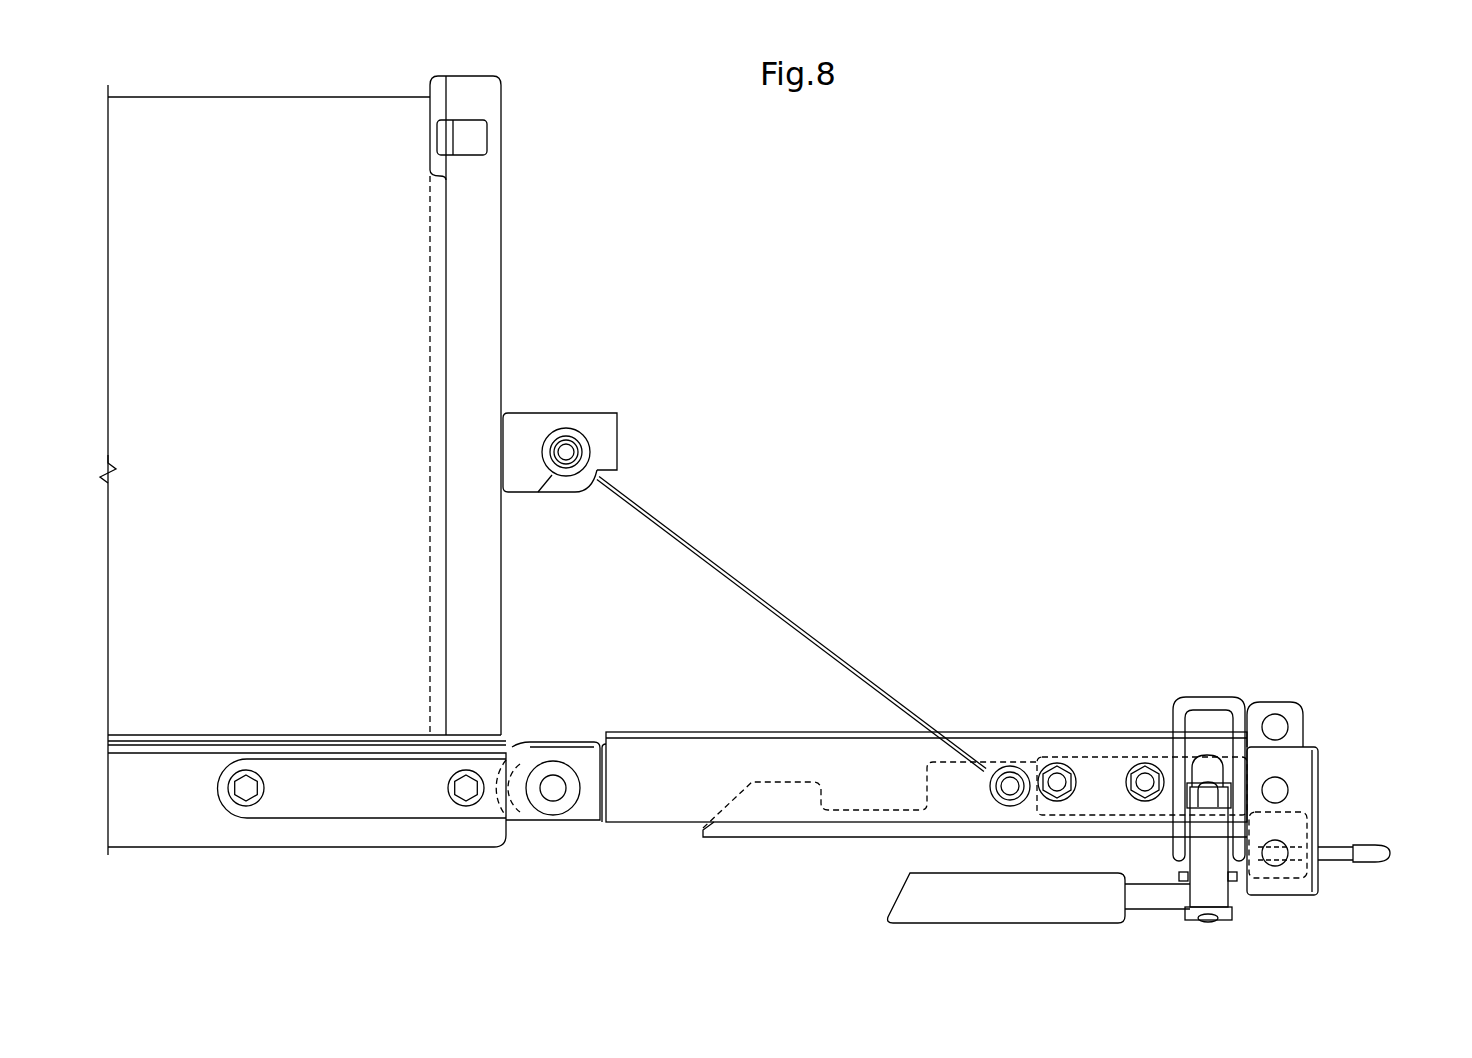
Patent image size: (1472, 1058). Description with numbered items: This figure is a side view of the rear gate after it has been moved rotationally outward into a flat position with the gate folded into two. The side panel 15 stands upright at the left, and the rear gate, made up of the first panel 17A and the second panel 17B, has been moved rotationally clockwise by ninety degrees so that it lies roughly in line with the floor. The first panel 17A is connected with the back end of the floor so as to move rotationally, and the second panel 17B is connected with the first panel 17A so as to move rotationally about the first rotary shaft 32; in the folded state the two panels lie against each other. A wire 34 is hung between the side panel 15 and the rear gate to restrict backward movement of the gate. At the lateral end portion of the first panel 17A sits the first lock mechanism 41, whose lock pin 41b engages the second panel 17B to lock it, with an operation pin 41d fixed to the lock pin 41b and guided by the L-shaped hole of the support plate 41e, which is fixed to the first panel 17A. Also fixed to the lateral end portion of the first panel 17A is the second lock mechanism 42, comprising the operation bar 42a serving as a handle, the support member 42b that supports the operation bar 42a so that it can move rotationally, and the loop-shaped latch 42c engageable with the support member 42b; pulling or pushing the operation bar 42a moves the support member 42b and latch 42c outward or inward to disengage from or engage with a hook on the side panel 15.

The side panel 15 is at (398, 266).
The first panel 17A is at (693, 755).
The second panel 17B is at (739, 833).
The first rotary shaft 32 is at (1277, 790).
The wire 34 is at (773, 603).
The first lock mechanism 41 is at (1395, 848).
The lock pin 41b is at (1277, 852).
The operation pin 41d is at (1373, 858).
The support plate 41e is at (1317, 888).
The second lock mechanism 42 is at (988, 903).
The operation bar 42a is at (915, 882).
The support member 42b is at (1220, 895).
The latch 42c is at (1192, 708).